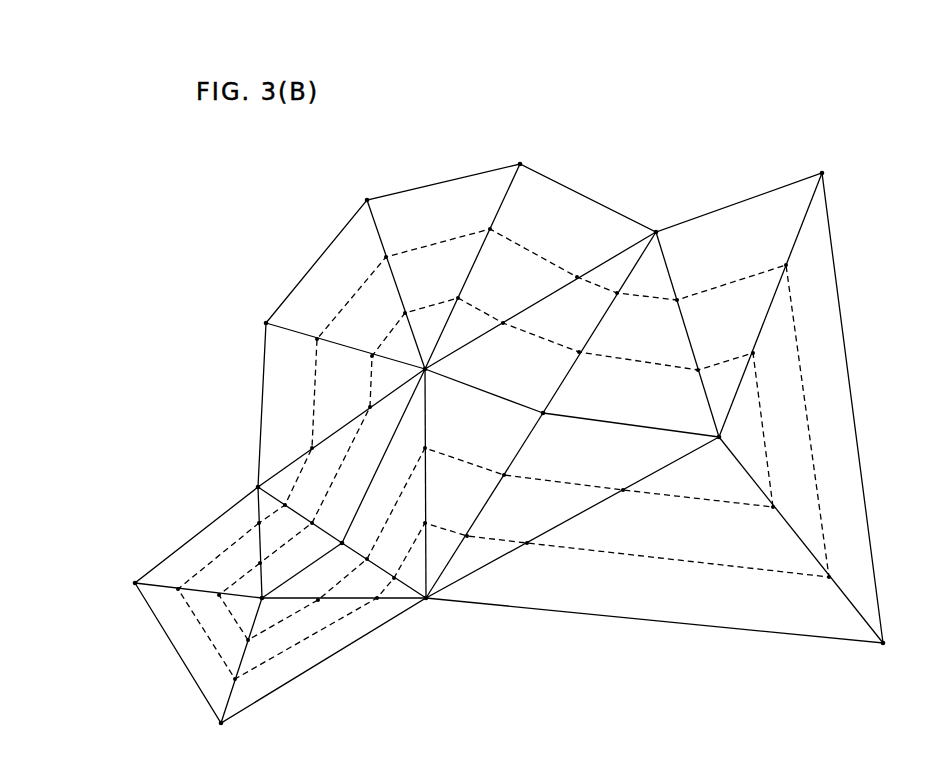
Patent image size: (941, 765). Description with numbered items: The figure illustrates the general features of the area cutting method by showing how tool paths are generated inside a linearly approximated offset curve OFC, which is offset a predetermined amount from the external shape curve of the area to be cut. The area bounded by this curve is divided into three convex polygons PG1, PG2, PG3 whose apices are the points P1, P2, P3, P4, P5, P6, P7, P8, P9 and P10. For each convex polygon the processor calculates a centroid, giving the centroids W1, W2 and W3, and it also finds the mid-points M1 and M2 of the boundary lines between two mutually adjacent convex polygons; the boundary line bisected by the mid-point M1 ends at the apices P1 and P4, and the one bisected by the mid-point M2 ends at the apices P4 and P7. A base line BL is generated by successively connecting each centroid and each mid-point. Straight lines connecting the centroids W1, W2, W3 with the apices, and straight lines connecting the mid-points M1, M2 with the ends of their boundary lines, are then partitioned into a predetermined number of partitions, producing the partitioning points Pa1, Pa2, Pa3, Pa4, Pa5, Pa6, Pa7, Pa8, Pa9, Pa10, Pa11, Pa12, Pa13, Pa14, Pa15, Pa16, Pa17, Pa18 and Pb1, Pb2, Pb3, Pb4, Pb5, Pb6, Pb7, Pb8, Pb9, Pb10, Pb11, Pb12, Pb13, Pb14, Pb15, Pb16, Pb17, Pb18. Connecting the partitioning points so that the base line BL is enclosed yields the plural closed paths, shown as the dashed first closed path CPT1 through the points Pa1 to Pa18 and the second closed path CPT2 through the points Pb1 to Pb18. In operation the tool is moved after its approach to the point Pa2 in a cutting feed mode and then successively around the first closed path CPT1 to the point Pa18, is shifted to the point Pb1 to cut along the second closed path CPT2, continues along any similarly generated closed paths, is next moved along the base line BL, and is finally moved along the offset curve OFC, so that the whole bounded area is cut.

The offset curve OFC is at (262, 401).
The convex polygon PG1 is at (295, 663).
The convex polygon PG2 is at (543, 595).
The convex polygon PG3 is at (582, 208).
The base line BL is at (610, 422).
The first closed path CPT1 is at (712, 565).
The second closed path CPT2 is at (746, 505).
The apex of convex polygon P1 is at (246, 481).
The apex of convex polygon P2 is at (120, 585).
The apex of convex polygon P3 is at (223, 736).
The apex of convex polygon P4 is at (427, 611).
The apex of convex polygon P5 is at (894, 654).
The apex of convex polygon P6 is at (834, 170).
The apex of convex polygon P7 is at (662, 221).
The apex of convex polygon P8 is at (525, 154).
The apex of convex polygon P9 is at (361, 190).
The apex of convex polygon P10 is at (255, 321).
The centroid of convex polygon W1 is at (276, 586).
The centroid of convex polygon W2 is at (737, 436).
The centroid of convex polygon W3 is at (448, 366).
The mid-point of boundary line M1 is at (358, 540).
The mid-point of boundary line M2 is at (562, 405).
The partitioning point Pa1 is at (246, 523).
The partitioning point Pa2 is at (170, 579).
The partitioning point Pa3 is at (248, 689).
The partitioning point Pa4 is at (375, 612).
The partitioning point Pa5 is at (385, 560).
The partitioning point Pa6 is at (439, 517).
The partitioning point Pa7 is at (485, 530).
The partitioning point Pa8 is at (534, 557).
The partitioning point Pa9 is at (843, 573).
The partitioning point Pa10 is at (806, 268).
The partitioning point Pa11 is at (695, 288).
The partitioning point Pa12 is at (634, 306).
The partitioning point Pa13 is at (587, 266).
The partitioning point Pa14 is at (513, 227).
The partitioning point Pa15 is at (403, 247).
The partitioning point Pa16 is at (315, 327).
The partitioning point Pa17 is at (294, 447).
The partitioning point Pa18 is at (287, 494).
The partitioning point Pb1 is at (274, 549).
The partitioning point Pb2 is at (217, 586).
The partitioning point Pb3 is at (261, 650).
The partitioning point Pb4 is at (320, 613).
The partitioning point Pb5 is at (375, 583).
The partitioning point Pb6 is at (439, 439).
The partitioning point Pb7 is at (523, 468).
The partitioning point Pb8 is at (617, 481).
The partitioning point Pb9 is at (787, 503).
The partitioning point Pb10 is at (773, 357).
The partitioning point Pb11 is at (715, 359).
The partitioning point Pb12 is at (603, 348).
The partitioning point Pb13 is at (510, 339).
The partitioning point Pb14 is at (480, 297).
The partitioning point Pb15 is at (422, 304).
The partitioning point Pb16 is at (365, 344).
The partitioning point Pb17 is at (389, 416).
The partitioning point Pb18 is at (313, 511).